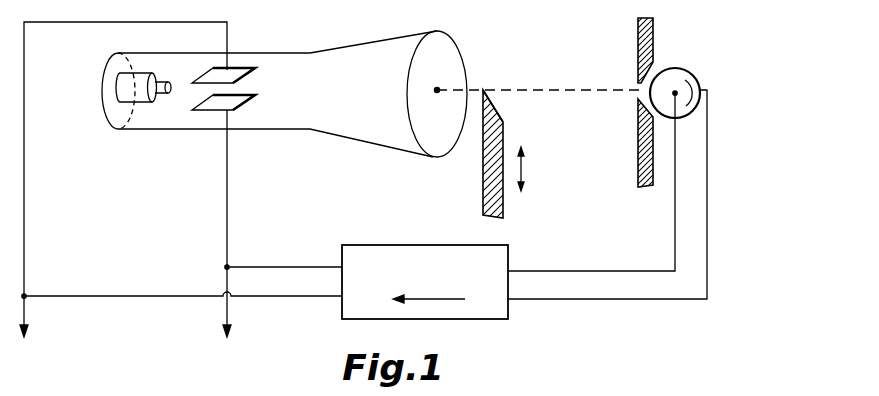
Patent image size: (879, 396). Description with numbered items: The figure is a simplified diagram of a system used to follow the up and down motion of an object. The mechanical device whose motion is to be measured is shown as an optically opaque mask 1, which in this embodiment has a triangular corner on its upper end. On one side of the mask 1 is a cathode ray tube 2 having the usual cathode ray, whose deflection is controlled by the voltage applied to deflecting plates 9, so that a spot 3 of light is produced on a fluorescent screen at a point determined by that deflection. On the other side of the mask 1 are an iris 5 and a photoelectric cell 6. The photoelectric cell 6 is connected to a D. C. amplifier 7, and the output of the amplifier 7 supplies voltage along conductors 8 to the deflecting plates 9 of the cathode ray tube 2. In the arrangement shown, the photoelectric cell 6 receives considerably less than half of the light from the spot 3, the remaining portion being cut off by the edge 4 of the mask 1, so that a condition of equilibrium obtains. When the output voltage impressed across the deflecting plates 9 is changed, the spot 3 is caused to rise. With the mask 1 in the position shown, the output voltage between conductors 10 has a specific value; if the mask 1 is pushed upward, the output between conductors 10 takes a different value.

The mask 1 is at (483, 165).
The cathode ray tube 2 is at (377, 43).
The spot 3 is at (439, 88).
The edge of the mask 4 is at (484, 89).
The iris 5 is at (636, 96).
The photoelectric cell 6 is at (690, 70).
The D. C. amplifier 7 is at (472, 320).
The conductors 8 is at (300, 296).
The deflecting plates 9 is at (240, 100).
The conductors 10 is at (29, 308).